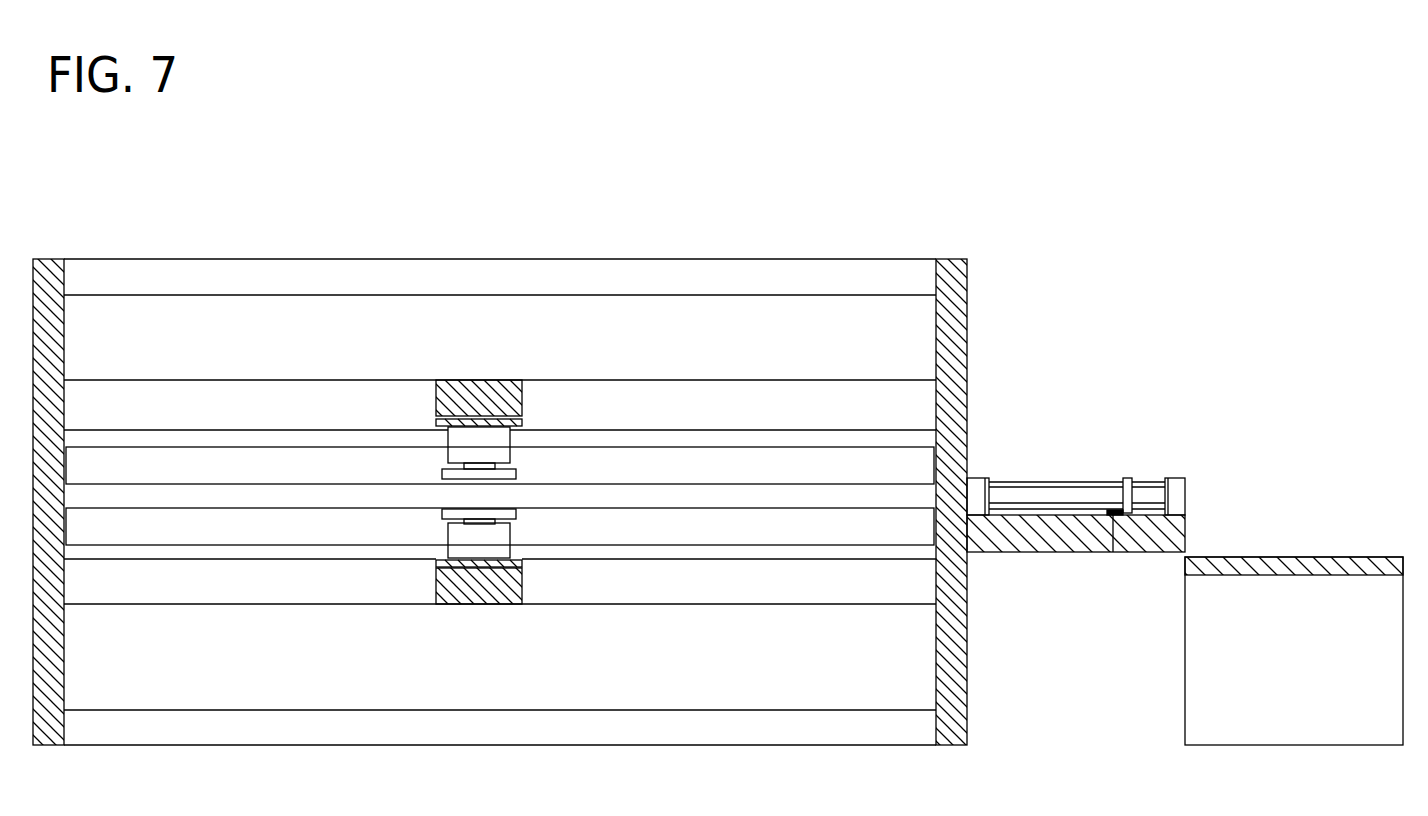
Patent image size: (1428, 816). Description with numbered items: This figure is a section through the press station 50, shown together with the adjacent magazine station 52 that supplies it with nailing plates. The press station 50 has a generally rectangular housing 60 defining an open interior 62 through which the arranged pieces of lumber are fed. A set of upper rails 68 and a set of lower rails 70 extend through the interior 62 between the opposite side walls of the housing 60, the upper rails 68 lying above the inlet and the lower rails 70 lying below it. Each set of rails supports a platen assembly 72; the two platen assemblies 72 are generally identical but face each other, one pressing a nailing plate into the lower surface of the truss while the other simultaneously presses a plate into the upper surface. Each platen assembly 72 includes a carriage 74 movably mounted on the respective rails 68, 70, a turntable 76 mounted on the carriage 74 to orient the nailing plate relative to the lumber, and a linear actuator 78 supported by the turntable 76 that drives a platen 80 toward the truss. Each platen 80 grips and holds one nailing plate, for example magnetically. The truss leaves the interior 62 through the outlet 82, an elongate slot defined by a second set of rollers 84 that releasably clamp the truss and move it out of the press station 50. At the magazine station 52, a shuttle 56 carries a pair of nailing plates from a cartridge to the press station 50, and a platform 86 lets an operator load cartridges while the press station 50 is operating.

The press station 50 is at (760, 234).
The magazine station 52 is at (1185, 546).
The shuttle 56 is at (1062, 536).
The housing 60 is at (968, 306).
The open interior 62 is at (830, 343).
The upper rails 68 is at (500, 358).
The lower rails 70 is at (687, 586).
The platen assembly 72 is at (482, 497).
The carriage 74 is at (456, 392).
The turntable 76 is at (523, 420).
The linear actuator 78 is at (512, 458).
The platen 80 is at (443, 474).
The outlet 82 is at (730, 494).
The second set of rollers 84 is at (805, 437).
The platform 86 is at (1313, 556).